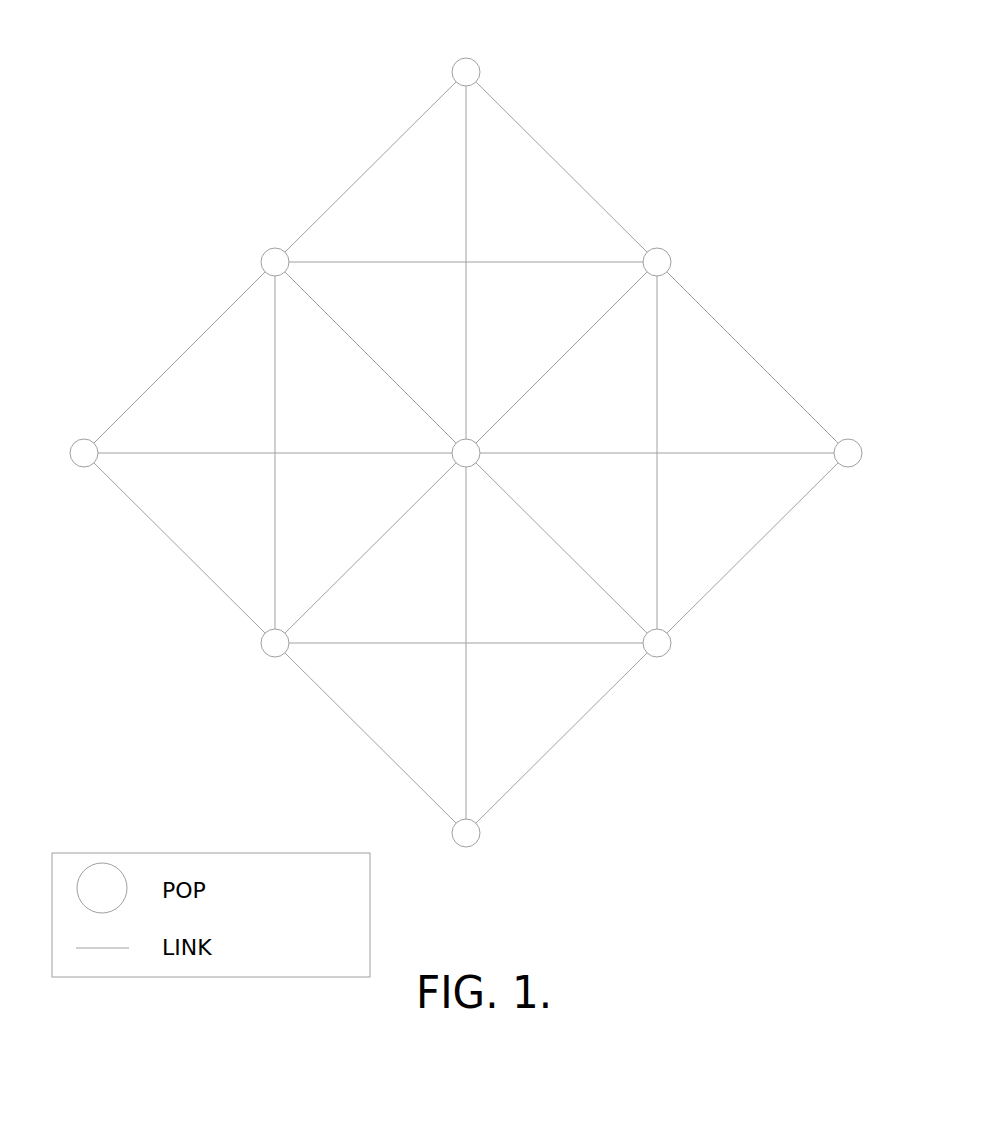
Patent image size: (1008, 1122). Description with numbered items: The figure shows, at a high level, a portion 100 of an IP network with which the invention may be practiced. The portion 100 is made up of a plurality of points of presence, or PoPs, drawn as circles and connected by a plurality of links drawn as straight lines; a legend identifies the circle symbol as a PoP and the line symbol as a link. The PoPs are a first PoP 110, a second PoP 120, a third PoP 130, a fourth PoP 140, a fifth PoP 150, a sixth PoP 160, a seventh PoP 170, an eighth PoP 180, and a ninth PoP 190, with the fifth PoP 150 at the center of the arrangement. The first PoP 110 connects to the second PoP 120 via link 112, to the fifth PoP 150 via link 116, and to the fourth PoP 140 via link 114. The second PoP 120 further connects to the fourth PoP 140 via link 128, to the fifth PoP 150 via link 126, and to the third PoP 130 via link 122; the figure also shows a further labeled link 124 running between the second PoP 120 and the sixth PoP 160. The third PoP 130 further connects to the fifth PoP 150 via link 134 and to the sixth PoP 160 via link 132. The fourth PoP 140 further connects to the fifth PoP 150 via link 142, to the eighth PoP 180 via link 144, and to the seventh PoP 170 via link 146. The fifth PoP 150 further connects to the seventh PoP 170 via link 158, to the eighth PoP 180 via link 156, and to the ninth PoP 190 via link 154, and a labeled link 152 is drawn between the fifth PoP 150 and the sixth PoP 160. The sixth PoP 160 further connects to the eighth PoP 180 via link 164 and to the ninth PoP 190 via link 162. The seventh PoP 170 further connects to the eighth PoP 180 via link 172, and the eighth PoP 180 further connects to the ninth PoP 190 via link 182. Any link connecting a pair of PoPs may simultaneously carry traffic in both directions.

The portion of an IP network 100 is at (748, 150).
The first PoP 110 is at (467, 57).
The link 112 is at (561, 160).
The link 114 is at (373, 155).
The link 116 is at (467, 226).
The second PoP 120 is at (666, 248).
The link 122 is at (715, 302).
The link 124 is at (658, 418).
The link 126 is at (570, 343).
The link 128 is at (538, 260).
The third PoP 130 is at (862, 452).
The link 132 is at (770, 540).
The link 134 is at (703, 455).
The fourth PoP 140 is at (266, 248).
The link 142 is at (357, 340).
The link 144 is at (276, 348).
The link 146 is at (180, 347).
The fifth PoP 150 is at (478, 444).
The link 152 is at (557, 543).
The link 154 is at (466, 543).
The link 156 is at (392, 520).
The link 158 is at (334, 447).
The sixth PoP 160 is at (669, 654).
The link 162 is at (590, 735).
The link 164 is at (577, 644).
The seventh PoP 170 is at (70, 454).
The link 172 is at (178, 552).
The eighth PoP 180 is at (263, 654).
The link 182 is at (375, 760).
The ninth PoP 190 is at (470, 847).